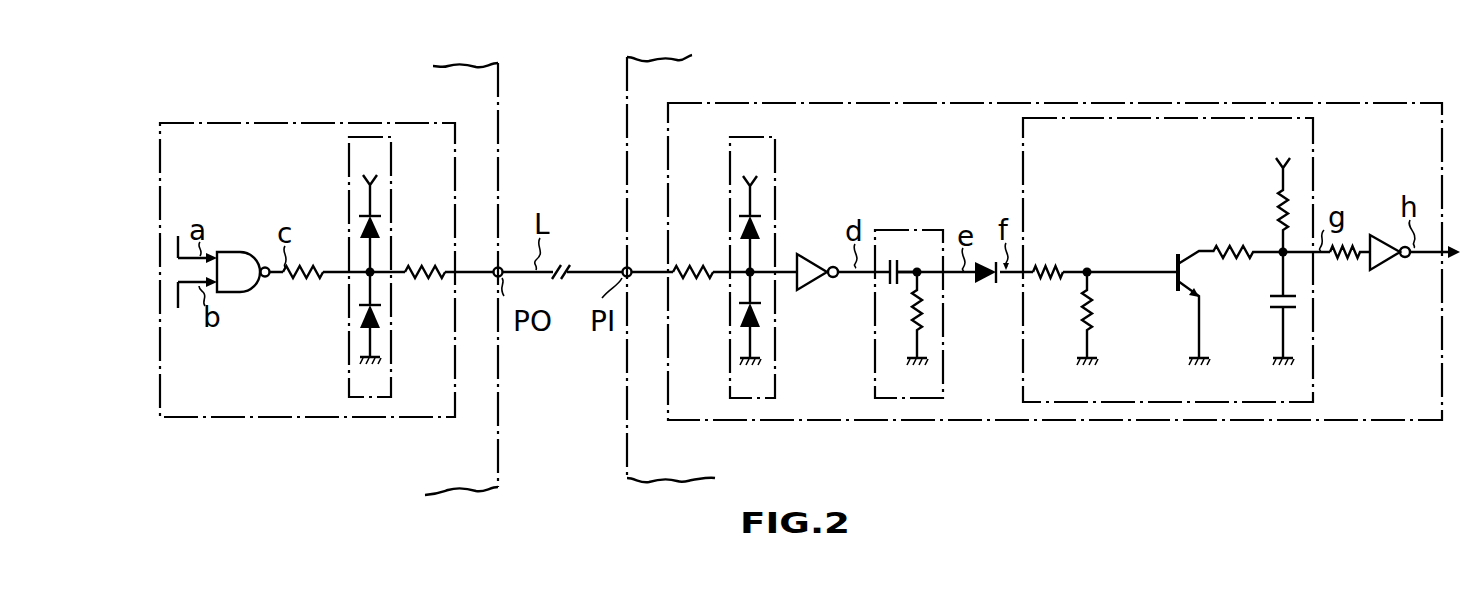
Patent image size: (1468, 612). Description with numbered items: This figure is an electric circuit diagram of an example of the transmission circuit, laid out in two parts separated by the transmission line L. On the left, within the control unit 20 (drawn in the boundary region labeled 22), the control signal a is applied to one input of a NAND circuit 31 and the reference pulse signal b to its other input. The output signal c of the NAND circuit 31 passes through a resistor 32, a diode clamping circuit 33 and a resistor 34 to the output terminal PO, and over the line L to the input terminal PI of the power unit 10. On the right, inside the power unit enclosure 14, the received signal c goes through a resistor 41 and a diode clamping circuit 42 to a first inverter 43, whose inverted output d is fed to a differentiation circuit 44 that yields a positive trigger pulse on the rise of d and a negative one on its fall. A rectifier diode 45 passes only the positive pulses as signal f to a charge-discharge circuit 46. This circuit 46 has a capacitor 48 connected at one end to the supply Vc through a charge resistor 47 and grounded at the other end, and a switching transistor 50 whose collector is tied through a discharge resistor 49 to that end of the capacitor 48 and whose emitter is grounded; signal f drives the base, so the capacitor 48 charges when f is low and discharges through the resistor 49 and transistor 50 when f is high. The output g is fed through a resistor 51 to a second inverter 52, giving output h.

The power unit 10 is at (622, 128).
The receiver circuit 14 is at (1272, 103).
The control unit 20 is at (503, 124).
The transmitter circuit 22 is at (322, 123).
The NAND circuit 31 is at (241, 252).
The resistor 32 is at (303, 279).
The diode clamping circuit 33 is at (392, 214).
The resistor 34 is at (428, 279).
The resistor 41 is at (692, 279).
The diode clamping circuit 42 is at (777, 200).
The first inverter 43 is at (818, 292).
The differentiation circuit 44 is at (925, 230).
The rectifier diode 45 is at (985, 292).
The charge-discharge circuit 46 is at (1315, 157).
The charge resistor 47 is at (1282, 203).
The capacitor 48 is at (1271, 304).
The discharge resistor 49 is at (1225, 249).
The switching transistor 50 is at (1176, 257).
The resistor 51 is at (1344, 260).
The second inverter 52 is at (1390, 270).